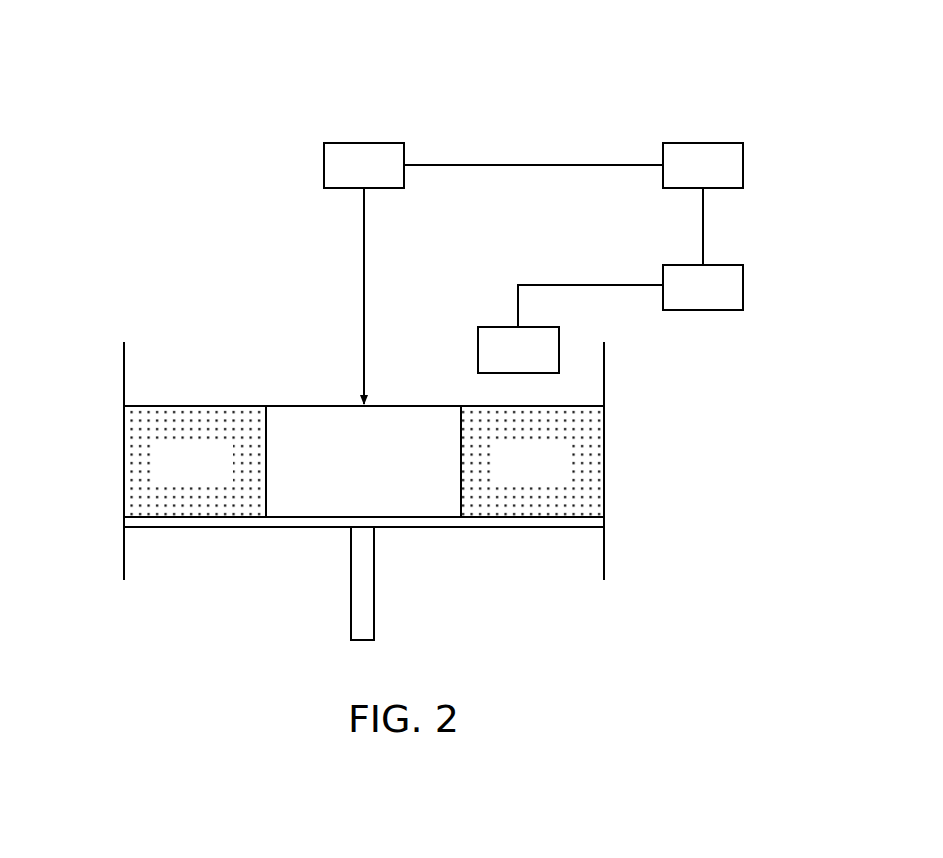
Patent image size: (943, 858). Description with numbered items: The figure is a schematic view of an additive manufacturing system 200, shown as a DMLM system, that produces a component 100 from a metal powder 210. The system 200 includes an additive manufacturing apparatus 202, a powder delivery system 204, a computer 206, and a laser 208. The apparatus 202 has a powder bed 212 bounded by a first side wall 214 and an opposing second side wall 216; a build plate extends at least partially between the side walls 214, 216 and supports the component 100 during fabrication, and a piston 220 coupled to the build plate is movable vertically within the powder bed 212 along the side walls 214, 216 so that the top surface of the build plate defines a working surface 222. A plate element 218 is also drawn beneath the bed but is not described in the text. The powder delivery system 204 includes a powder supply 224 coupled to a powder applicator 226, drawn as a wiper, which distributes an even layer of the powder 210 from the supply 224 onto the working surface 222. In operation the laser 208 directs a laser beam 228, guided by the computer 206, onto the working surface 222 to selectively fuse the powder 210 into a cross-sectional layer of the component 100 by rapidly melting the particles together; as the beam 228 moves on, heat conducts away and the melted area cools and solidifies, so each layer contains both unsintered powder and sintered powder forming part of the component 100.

The additive manufacturing system 200 is at (232, 75).
The additive manufacturing apparatus 202 is at (282, 330).
The powder delivery system 204 is at (532, 272).
The computer 206 is at (745, 166).
The laser 208 is at (323, 160).
The metal powder 210 is at (215, 474).
The powder bed 212 is at (606, 433).
The first side wall 214 is at (122, 556).
The second side wall 216 is at (605, 551).
The base plate 218 is at (522, 520).
The piston 220 is at (375, 583).
The working surface 222 is at (555, 474).
The powder supply 224 is at (745, 287).
The powder applicator 226 is at (477, 352).
The laser beam 228 is at (366, 275).
The component 100 is at (384, 474).